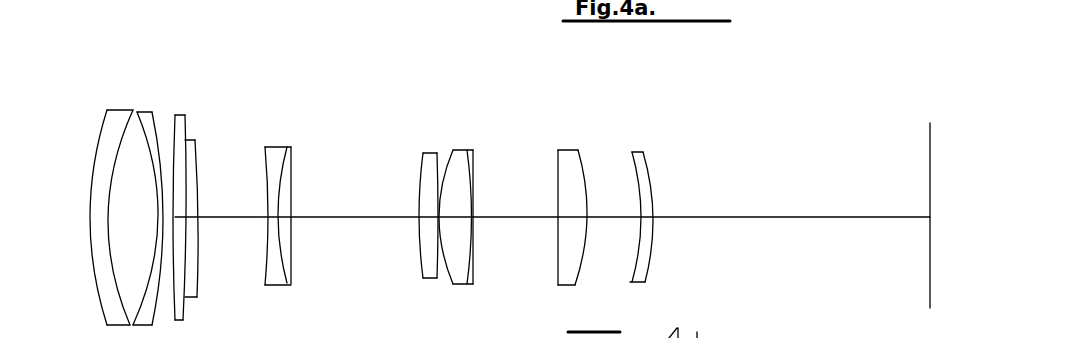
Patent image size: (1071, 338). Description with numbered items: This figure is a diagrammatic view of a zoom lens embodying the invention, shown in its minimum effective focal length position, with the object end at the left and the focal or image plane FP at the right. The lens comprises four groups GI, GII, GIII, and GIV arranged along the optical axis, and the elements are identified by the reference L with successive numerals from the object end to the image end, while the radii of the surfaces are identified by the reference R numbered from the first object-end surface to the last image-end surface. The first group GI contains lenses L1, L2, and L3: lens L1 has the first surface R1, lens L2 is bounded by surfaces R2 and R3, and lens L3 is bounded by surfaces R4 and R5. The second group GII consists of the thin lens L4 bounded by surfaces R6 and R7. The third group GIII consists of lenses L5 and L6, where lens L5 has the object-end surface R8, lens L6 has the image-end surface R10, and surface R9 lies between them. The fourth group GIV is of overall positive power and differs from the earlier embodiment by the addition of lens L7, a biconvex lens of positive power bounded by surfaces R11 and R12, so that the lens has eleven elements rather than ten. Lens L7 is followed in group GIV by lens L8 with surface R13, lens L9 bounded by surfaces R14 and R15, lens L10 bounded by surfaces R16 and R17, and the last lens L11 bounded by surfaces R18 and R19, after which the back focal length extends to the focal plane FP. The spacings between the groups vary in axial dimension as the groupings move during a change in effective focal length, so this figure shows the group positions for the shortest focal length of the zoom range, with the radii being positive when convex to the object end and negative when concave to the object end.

The first lens group GI is at (180, 70).
The second lens group GII is at (200, 77).
The third lens group GIII is at (293, 103).
The fourth lens group GIV is at (652, 105).
The focal plane FP is at (930, 152).
The lens element L1 is at (95, 221).
The lens element L2 is at (115, 205).
The lens element L3 is at (200, 208).
The lens element L4 is at (207, 218).
The lens element L5 is at (259, 222).
The lens element L6 is at (315, 225).
The lens element L7 is at (405, 216).
The lens element L8 is at (465, 215).
The lens element L9 is at (494, 230).
The lens element L10 is at (567, 205).
The lens element L11 is at (646, 213).
The lens surface R1 is at (95, 143).
The lens surface R2 is at (123, 127).
The lens surface R3 is at (150, 127).
The lens surface R4 is at (159, 118).
The lens surface R5 is at (183, 116).
The lens surface R6 is at (193, 140).
The lens surface R7 is at (190, 182).
The lens surface R8 is at (265, 162).
The lens surface R9 is at (275, 183).
The lens surface R10 is at (293, 175).
The lens surface R11 is at (420, 170).
The lens surface R12 is at (435, 158).
The lens surface R13 is at (440, 150).
The lens surface R14 is at (462, 168).
The lens surface R15 is at (477, 188).
The lens surface R16 is at (558, 163).
The lens surface R17 is at (582, 165).
The lens surface R18 is at (642, 183).
The lens surface R19 is at (653, 178).